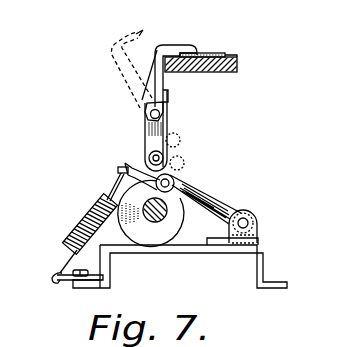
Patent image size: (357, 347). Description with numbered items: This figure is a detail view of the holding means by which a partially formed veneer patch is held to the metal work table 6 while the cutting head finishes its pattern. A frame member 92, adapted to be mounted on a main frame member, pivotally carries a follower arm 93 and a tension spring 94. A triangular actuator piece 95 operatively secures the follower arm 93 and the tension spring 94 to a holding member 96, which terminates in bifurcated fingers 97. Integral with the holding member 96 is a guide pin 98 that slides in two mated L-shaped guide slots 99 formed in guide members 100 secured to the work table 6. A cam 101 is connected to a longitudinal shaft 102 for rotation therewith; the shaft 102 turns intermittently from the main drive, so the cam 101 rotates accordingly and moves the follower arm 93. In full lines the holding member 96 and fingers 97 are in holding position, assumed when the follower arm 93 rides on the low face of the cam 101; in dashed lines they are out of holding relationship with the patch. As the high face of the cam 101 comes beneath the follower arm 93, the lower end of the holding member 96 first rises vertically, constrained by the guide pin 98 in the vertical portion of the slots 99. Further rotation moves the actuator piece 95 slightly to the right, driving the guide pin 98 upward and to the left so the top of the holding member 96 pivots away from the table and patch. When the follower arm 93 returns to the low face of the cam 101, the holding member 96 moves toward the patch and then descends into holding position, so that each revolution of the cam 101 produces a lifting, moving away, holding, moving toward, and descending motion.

The metal work table 6 is at (237, 62).
The frame member 92 is at (257, 262).
The follower arm 93 is at (217, 197).
The tension spring 94 is at (88, 212).
The triangular actuator piece 95 is at (143, 172).
The holding member 96 is at (148, 138).
The bifurcated fingers 97 is at (193, 50).
The guide pin 98 is at (162, 110).
The L-shaped guide slots 99 is at (162, 107).
The guide members 100 is at (145, 78).
The cam 101 is at (183, 229).
The longitudinal shaft 102 is at (156, 222).